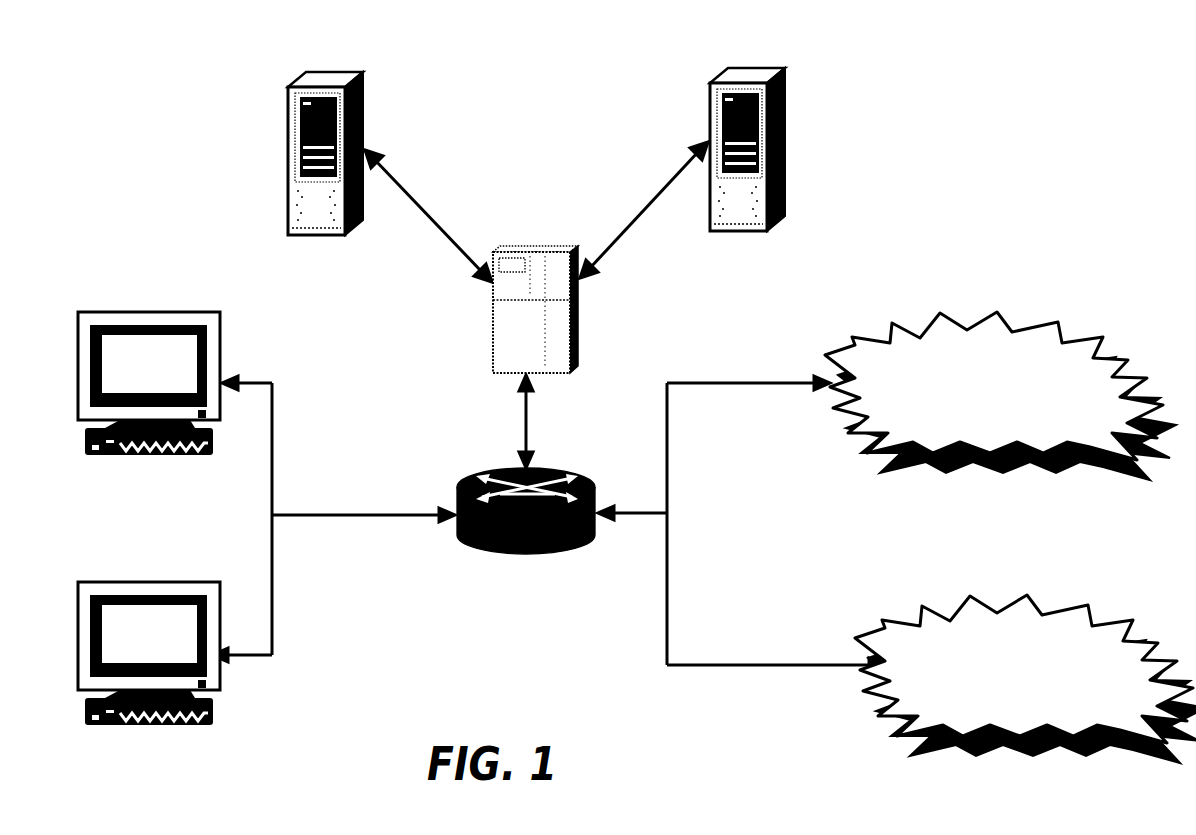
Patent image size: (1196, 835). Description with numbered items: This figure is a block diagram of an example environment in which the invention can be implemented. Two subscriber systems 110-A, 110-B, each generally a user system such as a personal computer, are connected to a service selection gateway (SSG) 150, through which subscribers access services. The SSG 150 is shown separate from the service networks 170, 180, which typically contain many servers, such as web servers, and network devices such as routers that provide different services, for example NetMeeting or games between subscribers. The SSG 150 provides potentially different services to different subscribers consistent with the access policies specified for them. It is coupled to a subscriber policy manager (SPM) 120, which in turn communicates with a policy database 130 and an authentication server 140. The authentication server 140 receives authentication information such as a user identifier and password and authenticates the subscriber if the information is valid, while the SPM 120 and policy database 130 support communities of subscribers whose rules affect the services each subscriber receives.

The subscriber system 110-A is at (175, 311).
The subscriber system 110-B is at (181, 581).
The subscriber policy manager (SPM) 120 is at (542, 248).
The policy database 130 is at (348, 76).
The authentication server 140 is at (767, 75).
The service selection gateway (SSG) 150 is at (572, 476).
The service network 170 is at (1094, 340).
The service network 180 is at (1116, 624).